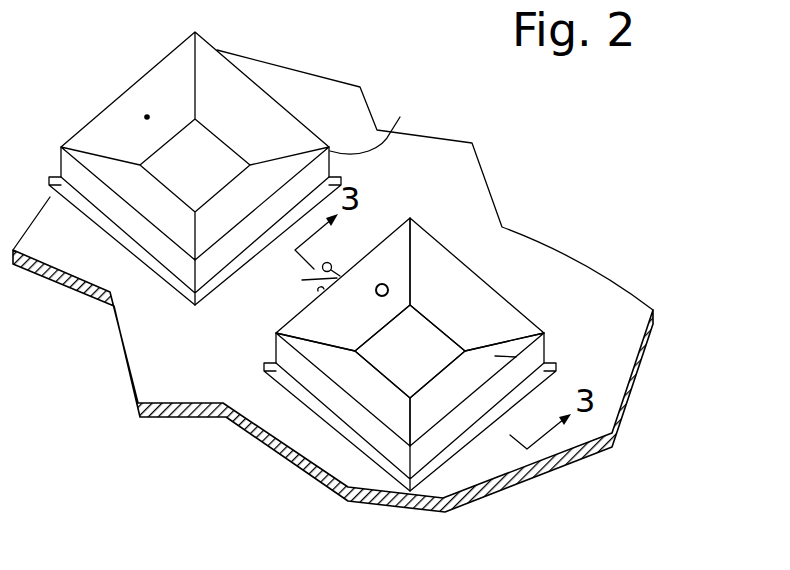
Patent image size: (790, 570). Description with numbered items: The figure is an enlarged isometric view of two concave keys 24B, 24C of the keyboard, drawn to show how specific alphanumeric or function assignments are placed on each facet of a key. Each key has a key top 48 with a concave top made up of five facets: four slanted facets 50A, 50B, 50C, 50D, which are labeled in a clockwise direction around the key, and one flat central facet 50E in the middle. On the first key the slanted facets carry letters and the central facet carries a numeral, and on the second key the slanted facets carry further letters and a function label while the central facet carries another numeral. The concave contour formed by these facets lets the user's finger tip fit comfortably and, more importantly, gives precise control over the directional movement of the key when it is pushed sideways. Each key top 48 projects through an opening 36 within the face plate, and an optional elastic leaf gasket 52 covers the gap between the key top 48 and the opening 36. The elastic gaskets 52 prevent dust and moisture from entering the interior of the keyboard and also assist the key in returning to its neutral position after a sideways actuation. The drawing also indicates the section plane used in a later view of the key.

The key 24B is at (240, 68).
The key 24C is at (440, 339).
The opening 36 is at (473, 433).
The key top 48 is at (641, 291).
The slanted facet 50A is at (497, 310).
The slanted facet 50B is at (548, 364).
The slanted facet 50C is at (330, 358).
The slanted facet 50D is at (385, 253).
The flat central facet 50E is at (413, 322).
The elastic leaf gasket 52 is at (50, 174).